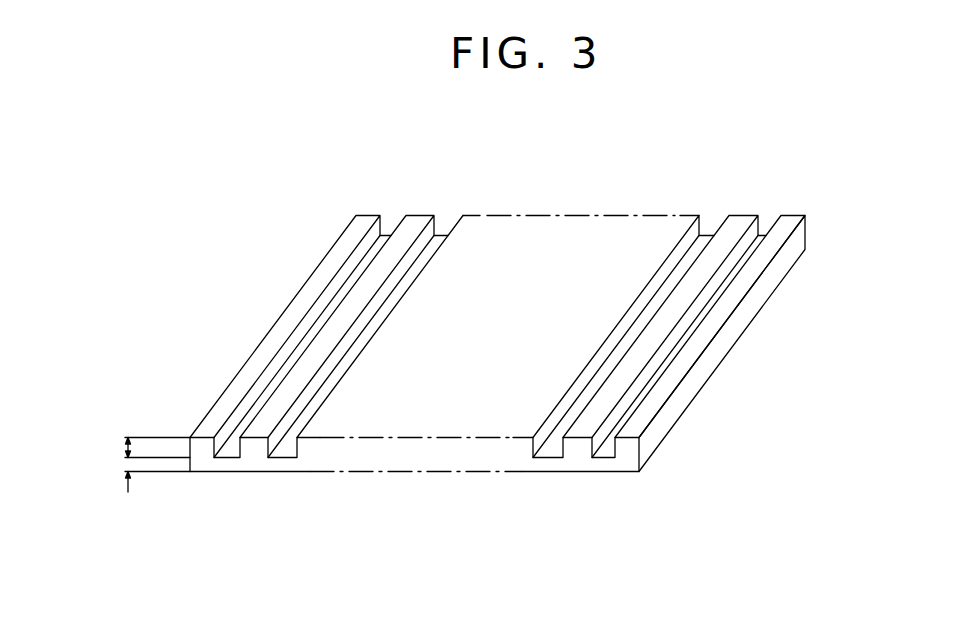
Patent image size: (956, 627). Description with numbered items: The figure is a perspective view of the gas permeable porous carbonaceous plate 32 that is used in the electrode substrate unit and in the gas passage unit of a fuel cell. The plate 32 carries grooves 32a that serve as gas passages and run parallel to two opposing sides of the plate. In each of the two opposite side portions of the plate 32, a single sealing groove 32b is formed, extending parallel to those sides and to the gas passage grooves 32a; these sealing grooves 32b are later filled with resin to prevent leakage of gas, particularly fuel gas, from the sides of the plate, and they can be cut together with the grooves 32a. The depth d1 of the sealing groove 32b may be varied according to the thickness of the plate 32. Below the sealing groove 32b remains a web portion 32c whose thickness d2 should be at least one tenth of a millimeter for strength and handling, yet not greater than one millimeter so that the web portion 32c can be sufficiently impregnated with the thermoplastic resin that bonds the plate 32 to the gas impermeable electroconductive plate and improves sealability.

The gas permeable porous carbonaceous plate 32 is at (732, 333).
The grooves 32a is at (287, 447).
The sealing groove 32b is at (232, 450).
The web portion 32c is at (224, 466).
The depth of the groove d1 is at (125, 448).
The thickness of the web portion d2 is at (125, 469).